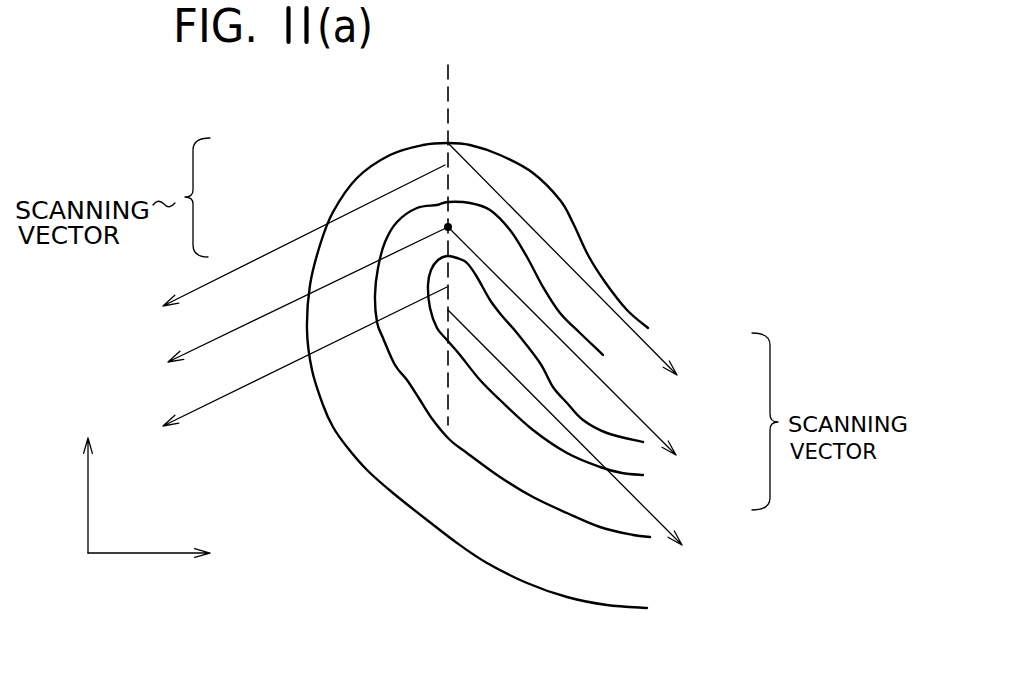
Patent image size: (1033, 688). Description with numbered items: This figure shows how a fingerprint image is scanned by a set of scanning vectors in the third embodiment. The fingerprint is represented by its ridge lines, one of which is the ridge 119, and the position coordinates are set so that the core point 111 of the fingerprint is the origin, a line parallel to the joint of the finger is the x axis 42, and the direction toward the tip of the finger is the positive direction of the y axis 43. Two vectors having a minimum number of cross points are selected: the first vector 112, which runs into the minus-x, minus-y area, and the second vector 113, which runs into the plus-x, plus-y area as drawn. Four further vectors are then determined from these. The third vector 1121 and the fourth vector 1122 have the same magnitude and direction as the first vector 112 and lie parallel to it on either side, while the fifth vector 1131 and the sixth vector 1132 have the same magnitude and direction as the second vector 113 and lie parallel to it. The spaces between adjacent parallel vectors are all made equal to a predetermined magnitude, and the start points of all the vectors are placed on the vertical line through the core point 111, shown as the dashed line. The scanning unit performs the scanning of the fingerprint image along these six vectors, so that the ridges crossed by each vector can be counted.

The core point 111 is at (448, 227).
The first vector 112 is at (285, 306).
The third vector 1121 is at (297, 237).
The fourth vector 1122 is at (211, 225).
The second vector 113 is at (643, 422).
The fifth vector 1131 is at (657, 353).
The sixth vector 1132 is at (657, 520).
The fingerprint ridge line 119 is at (610, 606).
The x axis 42 is at (167, 555).
The y axis 43 is at (88, 503).